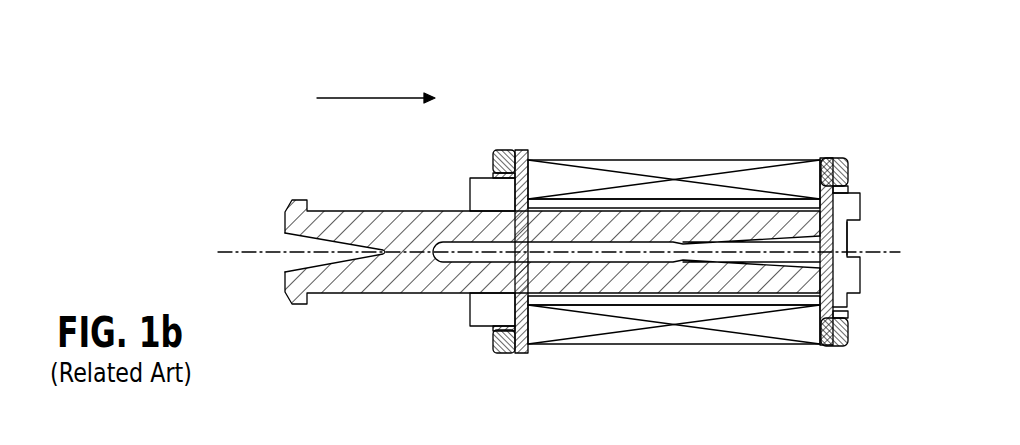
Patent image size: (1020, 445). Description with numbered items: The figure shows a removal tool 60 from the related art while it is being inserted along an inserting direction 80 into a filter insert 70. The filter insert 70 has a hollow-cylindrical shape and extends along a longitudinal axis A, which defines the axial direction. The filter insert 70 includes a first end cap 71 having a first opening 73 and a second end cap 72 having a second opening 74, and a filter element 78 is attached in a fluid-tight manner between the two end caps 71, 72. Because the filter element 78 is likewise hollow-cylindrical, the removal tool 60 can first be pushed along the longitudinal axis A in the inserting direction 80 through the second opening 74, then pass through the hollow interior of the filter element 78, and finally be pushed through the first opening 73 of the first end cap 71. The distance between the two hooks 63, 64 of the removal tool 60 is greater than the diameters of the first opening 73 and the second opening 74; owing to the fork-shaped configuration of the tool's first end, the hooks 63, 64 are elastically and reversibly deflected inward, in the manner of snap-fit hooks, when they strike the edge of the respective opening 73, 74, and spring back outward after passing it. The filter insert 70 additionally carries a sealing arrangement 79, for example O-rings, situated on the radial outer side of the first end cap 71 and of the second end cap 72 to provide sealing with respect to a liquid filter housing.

The removal tool 60 is at (392, 192).
The inserting direction 80 is at (372, 97).
The filter insert 70 is at (641, 137).
The filter element 78 is at (735, 182).
The hook 63 is at (816, 205).
The second end cap 72 is at (488, 177).
The second opening 74 is at (505, 294).
The sealing arrangement 79 is at (505, 150).
The first end cap 71 is at (845, 183).
The hook 64 is at (861, 282).
The first opening 73 is at (846, 243).
The longitudinal axis A is at (231, 252).